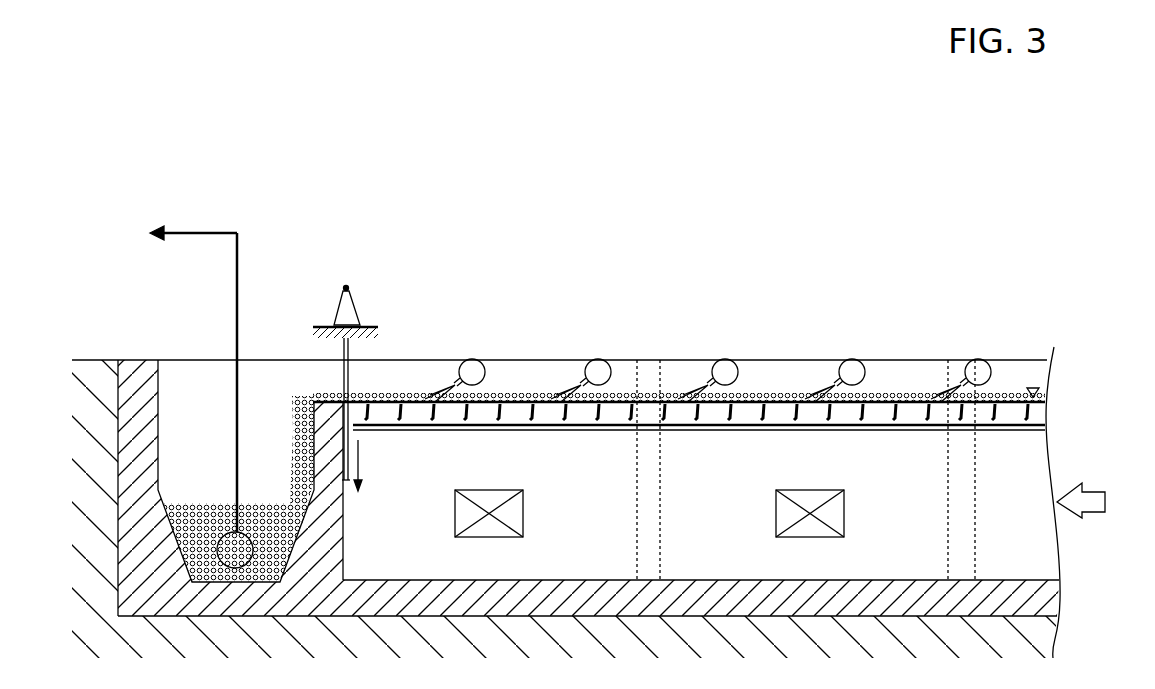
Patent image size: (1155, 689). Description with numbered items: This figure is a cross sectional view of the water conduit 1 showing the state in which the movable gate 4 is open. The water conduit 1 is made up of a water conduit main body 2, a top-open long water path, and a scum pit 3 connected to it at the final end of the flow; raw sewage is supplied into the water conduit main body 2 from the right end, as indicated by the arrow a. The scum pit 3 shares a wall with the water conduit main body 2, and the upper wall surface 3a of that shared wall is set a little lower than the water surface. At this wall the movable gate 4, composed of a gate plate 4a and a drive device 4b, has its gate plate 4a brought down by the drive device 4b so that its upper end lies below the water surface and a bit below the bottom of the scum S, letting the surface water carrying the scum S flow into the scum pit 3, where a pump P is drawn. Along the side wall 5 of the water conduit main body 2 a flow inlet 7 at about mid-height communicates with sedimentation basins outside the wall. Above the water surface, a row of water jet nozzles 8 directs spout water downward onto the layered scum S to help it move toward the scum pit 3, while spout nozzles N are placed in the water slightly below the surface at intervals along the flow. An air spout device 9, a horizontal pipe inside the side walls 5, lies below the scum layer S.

The water conduit 1 is at (795, 338).
The water conduit main body 2 is at (1021, 348).
The scum pit 3 is at (211, 440).
The upper wall surface 3a is at (313, 398).
The movable gate 4 is at (432, 272).
The gate plate 4a is at (350, 403).
The drive device 4b is at (340, 310).
The side wall 5 is at (1025, 465).
The flow inlet 7 is at (520, 509).
The water jet nozzle 8 is at (478, 352).
The air spout device 9 is at (1047, 417).
The arrow indicating raw water supply direction a is at (1092, 507).
The scum S is at (503, 398).
The spout nozzle N is at (507, 405).
The pump P is at (201, 397).